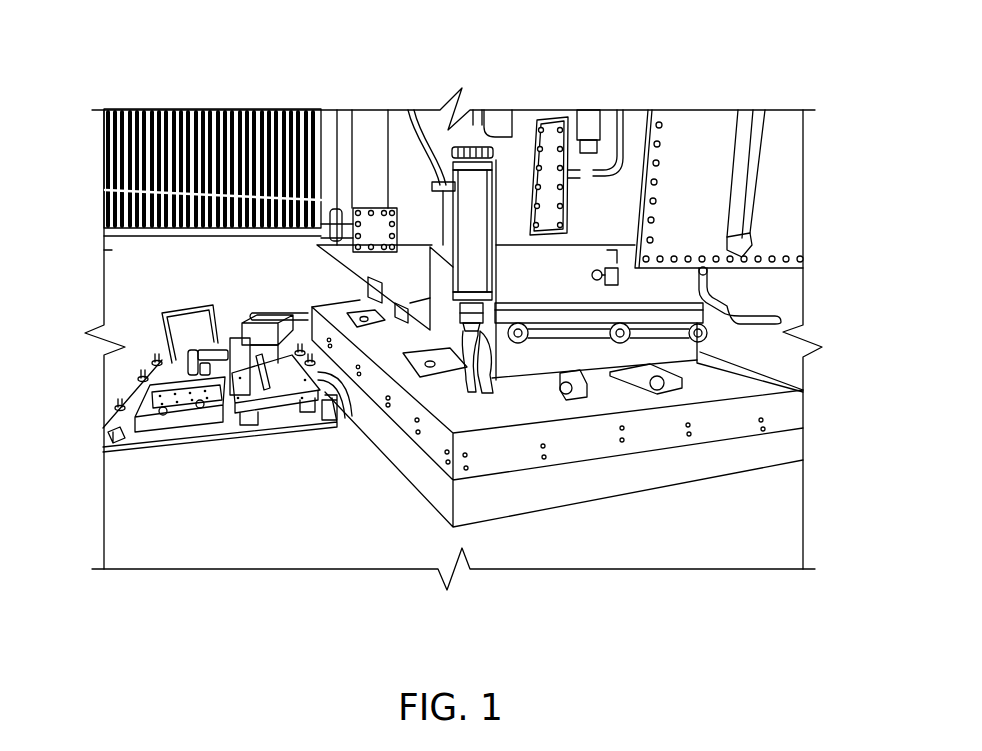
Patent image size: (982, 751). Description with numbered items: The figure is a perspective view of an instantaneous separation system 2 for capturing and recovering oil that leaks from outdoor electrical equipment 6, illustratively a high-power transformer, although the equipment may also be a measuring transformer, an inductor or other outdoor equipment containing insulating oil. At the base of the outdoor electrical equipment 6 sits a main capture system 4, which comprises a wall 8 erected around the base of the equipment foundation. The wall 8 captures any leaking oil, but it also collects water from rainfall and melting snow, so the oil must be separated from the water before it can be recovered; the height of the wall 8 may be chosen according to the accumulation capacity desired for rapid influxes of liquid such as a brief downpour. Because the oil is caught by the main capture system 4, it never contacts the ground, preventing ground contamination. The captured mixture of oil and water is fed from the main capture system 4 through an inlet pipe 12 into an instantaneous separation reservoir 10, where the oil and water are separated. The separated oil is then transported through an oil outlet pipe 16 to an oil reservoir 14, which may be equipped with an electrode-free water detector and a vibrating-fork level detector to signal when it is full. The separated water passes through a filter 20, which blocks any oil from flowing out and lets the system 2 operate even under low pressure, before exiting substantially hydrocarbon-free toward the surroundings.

The instantaneous separation system 2 is at (134, 60).
The main capture system 4 is at (588, 402).
The outdoor electrical equipment 6 is at (688, 167).
The wall 8 is at (765, 408).
The instantaneous separation reservoir 10 is at (258, 330).
The inlet pipe 12 is at (290, 313).
The oil reservoir 14 is at (172, 420).
The oil outlet pipe 16 is at (188, 347).
The filter 20 is at (307, 428).